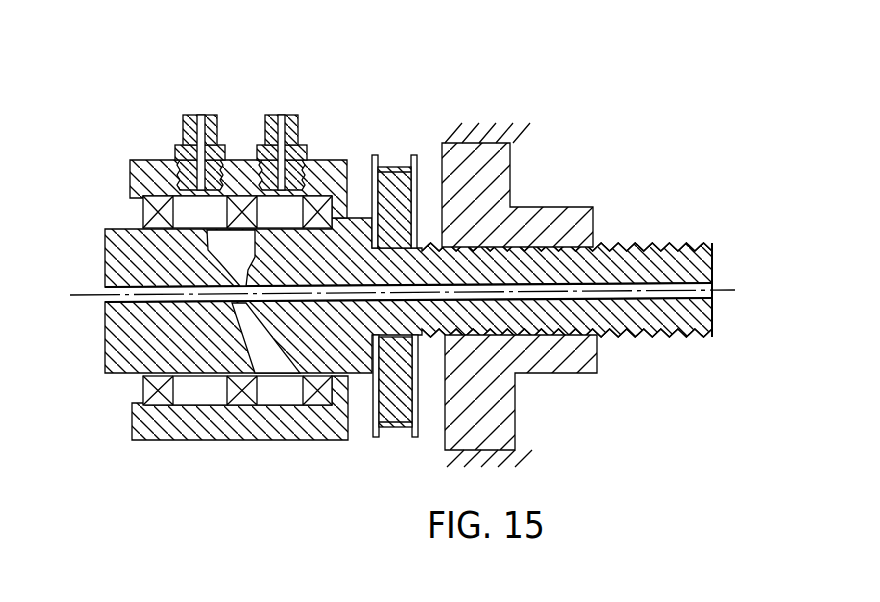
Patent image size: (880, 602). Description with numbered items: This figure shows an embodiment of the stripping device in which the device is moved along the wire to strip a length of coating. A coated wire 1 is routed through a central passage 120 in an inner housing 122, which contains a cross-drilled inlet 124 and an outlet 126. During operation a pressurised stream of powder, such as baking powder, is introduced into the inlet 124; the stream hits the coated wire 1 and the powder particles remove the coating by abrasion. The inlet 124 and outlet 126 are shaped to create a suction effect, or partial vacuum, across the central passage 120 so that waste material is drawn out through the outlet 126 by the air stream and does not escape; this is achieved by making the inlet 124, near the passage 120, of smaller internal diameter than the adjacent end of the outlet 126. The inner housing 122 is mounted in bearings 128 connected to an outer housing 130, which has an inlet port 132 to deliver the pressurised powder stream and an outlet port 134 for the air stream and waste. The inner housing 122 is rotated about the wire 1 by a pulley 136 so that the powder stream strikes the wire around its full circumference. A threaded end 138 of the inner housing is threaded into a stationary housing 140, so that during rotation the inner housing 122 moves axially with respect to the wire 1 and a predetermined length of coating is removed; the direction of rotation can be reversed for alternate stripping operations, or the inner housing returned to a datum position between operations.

The coated wire 1 is at (78, 291).
The central passage 120 is at (715, 280).
The inner housing 122 is at (125, 250).
The cross-drilled inlet 124 is at (215, 238).
The outlet 126 is at (243, 333).
The bearings 128 is at (235, 403).
The outer housing 130 is at (248, 430).
The inlet port 132 is at (185, 115).
The outlet port 134 is at (268, 115).
The pulley 136 is at (398, 170).
The threaded end 138 is at (637, 263).
The stationary housing 140 is at (557, 350).